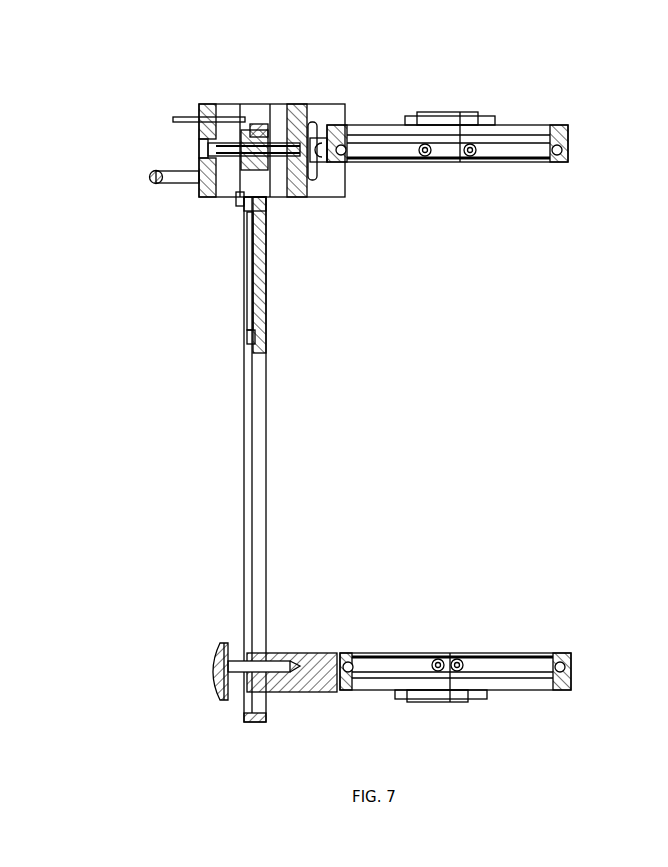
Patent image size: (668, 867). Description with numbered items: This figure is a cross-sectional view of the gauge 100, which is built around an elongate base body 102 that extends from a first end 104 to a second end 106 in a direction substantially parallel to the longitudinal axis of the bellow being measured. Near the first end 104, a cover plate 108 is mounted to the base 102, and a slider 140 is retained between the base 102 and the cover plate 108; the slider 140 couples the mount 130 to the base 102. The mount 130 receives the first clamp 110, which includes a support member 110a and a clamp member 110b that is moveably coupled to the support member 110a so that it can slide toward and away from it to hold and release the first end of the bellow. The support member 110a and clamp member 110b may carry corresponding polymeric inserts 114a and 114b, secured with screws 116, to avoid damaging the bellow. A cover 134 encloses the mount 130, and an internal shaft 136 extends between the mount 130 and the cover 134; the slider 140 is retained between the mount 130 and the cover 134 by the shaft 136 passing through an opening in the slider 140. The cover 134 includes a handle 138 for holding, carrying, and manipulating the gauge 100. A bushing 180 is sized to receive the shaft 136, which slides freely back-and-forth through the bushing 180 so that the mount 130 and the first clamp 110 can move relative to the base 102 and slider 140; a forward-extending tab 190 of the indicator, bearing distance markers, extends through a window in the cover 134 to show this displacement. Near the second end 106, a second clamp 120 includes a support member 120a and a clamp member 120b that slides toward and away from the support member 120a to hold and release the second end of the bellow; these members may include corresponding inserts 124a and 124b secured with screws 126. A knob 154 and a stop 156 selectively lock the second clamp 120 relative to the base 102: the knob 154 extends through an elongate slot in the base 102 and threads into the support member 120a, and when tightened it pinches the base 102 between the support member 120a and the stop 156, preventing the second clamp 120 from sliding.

The gauge 100 is at (526, 70).
The base body 102 is at (262, 456).
The first end 104 is at (304, 56).
The second end 106 is at (285, 735).
The cover plate 108 is at (248, 340).
The first clamp 110 is at (588, 150).
The support member 110a is at (328, 150).
The clamp member 110b is at (556, 126).
The insert 114a is at (345, 164).
The insert 114b is at (552, 164).
The screws 116 is at (428, 160).
The second clamp 120 is at (590, 674).
The support member 120a is at (307, 682).
The clamp member 120b is at (558, 690).
The insert 124a is at (341, 658).
The insert 124b is at (552, 658).
The screws 126 is at (455, 658).
The mount 130 is at (311, 104).
The cover 134 is at (200, 196).
The shaft 136 is at (246, 138).
The handle 138 is at (150, 177).
The slider 140 is at (257, 298).
The knob 154 is at (210, 674).
The stop 156 is at (262, 660).
The bushing 180 is at (262, 126).
The tab 190 is at (182, 117).